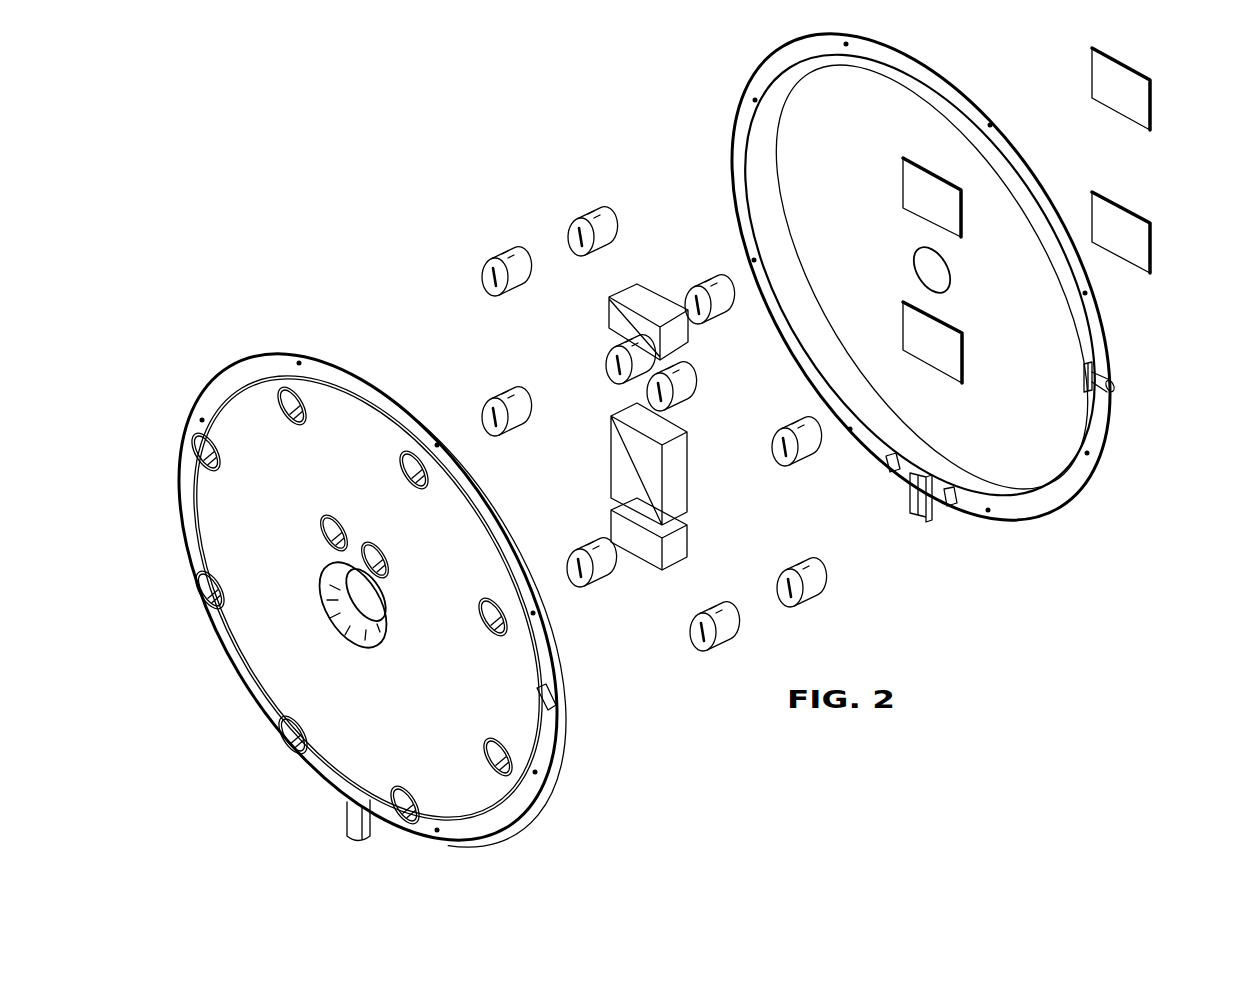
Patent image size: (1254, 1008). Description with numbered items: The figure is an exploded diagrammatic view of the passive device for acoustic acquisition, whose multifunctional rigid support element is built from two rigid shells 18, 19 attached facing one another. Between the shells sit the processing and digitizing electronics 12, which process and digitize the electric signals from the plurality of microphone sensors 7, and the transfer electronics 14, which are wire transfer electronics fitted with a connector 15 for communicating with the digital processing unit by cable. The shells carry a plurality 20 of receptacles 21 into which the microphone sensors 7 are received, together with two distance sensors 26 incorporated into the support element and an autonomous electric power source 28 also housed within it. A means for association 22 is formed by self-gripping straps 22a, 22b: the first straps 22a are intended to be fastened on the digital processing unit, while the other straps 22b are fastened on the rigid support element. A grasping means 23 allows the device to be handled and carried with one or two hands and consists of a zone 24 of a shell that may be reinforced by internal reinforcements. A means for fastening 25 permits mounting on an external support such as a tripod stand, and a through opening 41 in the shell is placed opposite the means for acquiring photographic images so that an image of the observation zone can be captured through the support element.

The microphone sensors 7 is at (708, 285).
The processing and digitizing electronics 12 is at (676, 470).
The transfer electronics 14 is at (676, 549).
The connector 15 is at (1112, 384).
The rigid shell 18 is at (253, 420).
The rigid shell 19 is at (800, 147).
The plurality of receptacles 20 is at (408, 805).
The receptacle 21 is at (208, 452).
The means for association 22 is at (1120, 242).
The self-gripping straps 22a is at (1138, 240).
The self-gripping straps 22b is at (915, 337).
The grasping means 23 is at (233, 635).
The reinforced zone 24 is at (367, 447).
The means for fastening 25 is at (923, 503).
The distance sensors 26 is at (652, 393).
The autonomous electric power source 28 is at (610, 317).
The through opening 41 is at (360, 598).